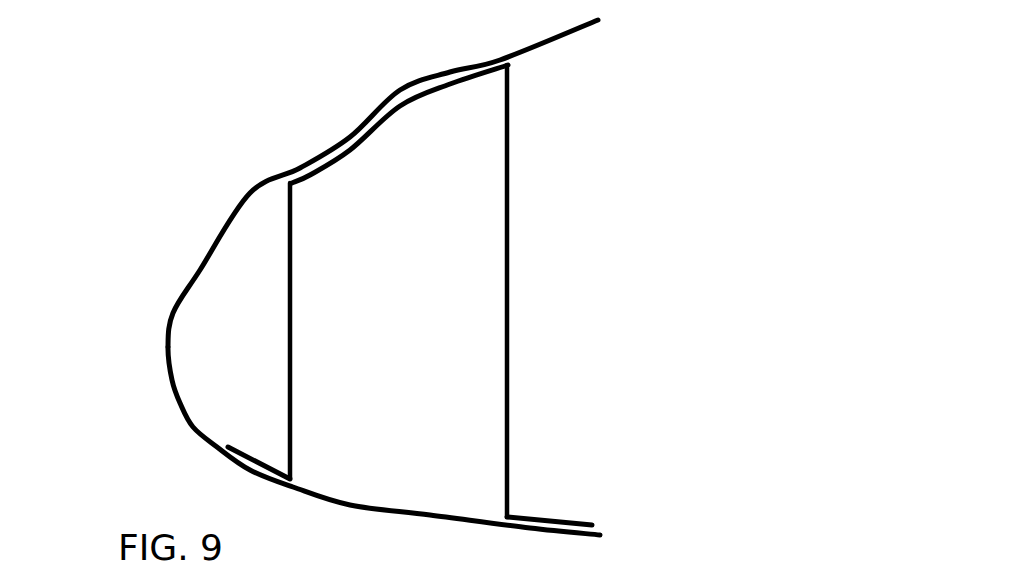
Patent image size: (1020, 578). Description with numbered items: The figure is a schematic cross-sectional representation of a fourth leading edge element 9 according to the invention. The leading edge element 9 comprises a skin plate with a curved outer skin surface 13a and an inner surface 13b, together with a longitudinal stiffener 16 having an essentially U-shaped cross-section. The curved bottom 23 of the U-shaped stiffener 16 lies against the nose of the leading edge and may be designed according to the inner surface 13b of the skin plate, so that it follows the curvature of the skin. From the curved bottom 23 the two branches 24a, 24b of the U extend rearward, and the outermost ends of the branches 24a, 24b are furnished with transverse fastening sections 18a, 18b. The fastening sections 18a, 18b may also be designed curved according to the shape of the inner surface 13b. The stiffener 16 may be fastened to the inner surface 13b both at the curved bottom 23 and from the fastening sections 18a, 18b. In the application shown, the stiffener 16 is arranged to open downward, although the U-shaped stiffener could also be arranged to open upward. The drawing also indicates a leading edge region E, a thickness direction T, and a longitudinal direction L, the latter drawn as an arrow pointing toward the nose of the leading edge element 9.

The leading edge element 9 is at (200, 131).
The lower outer skin portion 13a is at (177, 404).
The inner surface of the skin plate 13b is at (550, 40).
The curved bottom 23 is at (380, 117).
The branch of the U 24a is at (288, 234).
The branch of the U 24b is at (511, 329).
The transverse fastening section 18a is at (256, 457).
The transverse fastening section 18b is at (558, 516).
The stiffener 16 is at (552, 240).
The thickness direction T is at (750, 129).
The leading edge region E is at (136, 244).
The longitudinal direction L is at (823, 300).